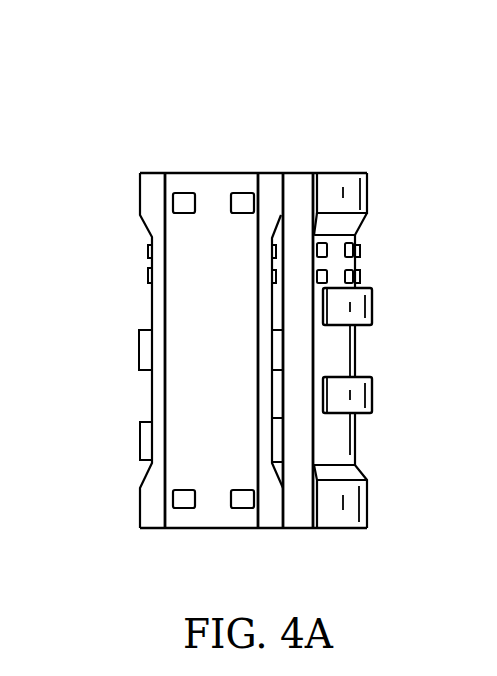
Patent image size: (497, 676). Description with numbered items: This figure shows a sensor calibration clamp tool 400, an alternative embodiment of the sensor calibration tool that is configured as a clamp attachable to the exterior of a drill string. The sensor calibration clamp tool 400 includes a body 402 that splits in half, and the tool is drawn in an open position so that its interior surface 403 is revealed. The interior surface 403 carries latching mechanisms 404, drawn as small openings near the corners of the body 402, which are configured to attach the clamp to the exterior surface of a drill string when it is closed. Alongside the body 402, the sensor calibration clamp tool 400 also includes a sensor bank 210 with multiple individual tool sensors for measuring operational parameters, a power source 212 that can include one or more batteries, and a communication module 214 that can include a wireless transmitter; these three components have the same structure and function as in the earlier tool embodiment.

The sensor calibration clamp tool 400 is at (357, 86).
The body 402 is at (113, 411).
The interior surface 403 is at (209, 134).
The latching mechanisms 404 is at (180, 193).
The sensor bank 210 is at (376, 257).
The power source 212 is at (372, 305).
The communication module 214 is at (372, 397).